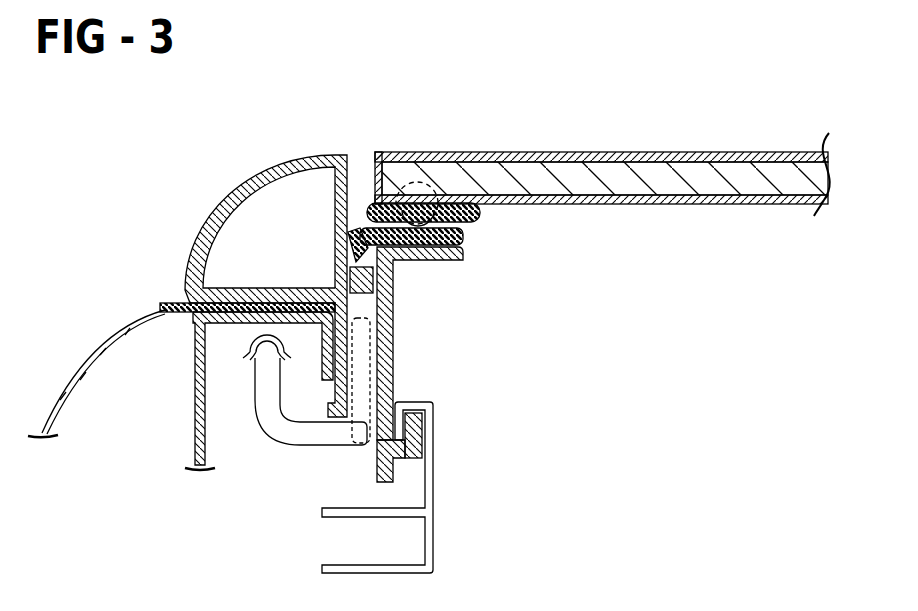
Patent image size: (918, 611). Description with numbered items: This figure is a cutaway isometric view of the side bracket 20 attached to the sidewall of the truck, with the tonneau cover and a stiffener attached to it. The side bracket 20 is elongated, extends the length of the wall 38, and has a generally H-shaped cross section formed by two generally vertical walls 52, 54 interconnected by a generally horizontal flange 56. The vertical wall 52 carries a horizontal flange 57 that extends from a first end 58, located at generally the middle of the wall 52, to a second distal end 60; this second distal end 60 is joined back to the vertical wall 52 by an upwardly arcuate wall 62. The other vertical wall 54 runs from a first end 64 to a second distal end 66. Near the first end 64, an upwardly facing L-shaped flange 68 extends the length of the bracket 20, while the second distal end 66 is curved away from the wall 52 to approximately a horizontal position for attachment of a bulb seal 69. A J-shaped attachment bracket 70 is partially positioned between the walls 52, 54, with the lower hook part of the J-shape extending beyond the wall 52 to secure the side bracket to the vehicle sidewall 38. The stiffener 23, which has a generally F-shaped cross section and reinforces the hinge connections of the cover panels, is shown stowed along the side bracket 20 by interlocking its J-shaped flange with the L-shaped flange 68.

The side bracket 20 is at (252, 248).
The stiffener 23 is at (433, 550).
The wall 38 is at (60, 387).
The vertical wall 52 is at (362, 222).
The vertical wall 54 is at (365, 361).
The horizontal flange 56 is at (380, 310).
The horizontal flange 57 is at (263, 292).
The first end 58 is at (338, 278).
The second distal end 60 is at (180, 298).
The upwardly arcuate wall 62 is at (265, 165).
The first end 64 is at (378, 479).
The second distal end 66 is at (465, 250).
The L-shaped flange 68 is at (413, 447).
The bulb seal 69 is at (480, 217).
The J-shaped attachment bracket 70 is at (297, 435).